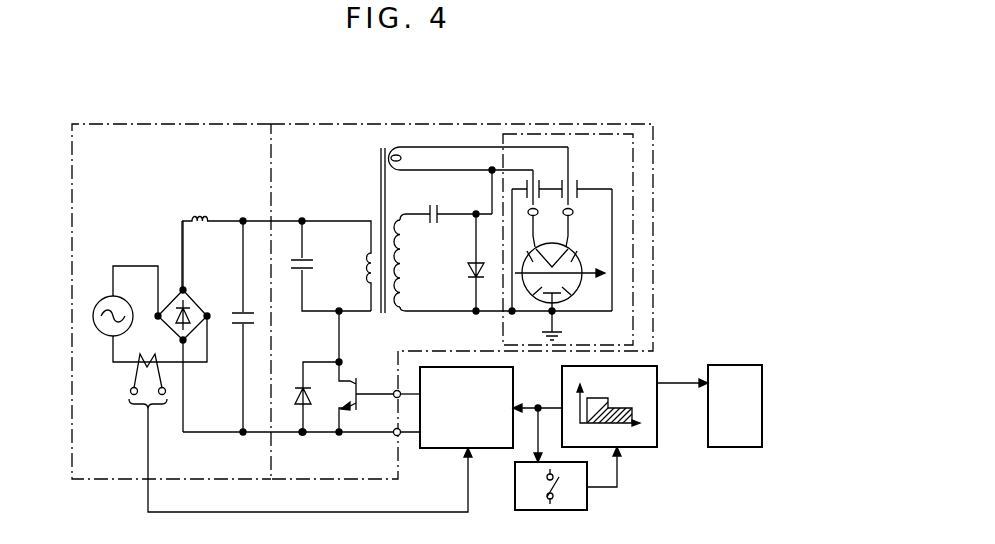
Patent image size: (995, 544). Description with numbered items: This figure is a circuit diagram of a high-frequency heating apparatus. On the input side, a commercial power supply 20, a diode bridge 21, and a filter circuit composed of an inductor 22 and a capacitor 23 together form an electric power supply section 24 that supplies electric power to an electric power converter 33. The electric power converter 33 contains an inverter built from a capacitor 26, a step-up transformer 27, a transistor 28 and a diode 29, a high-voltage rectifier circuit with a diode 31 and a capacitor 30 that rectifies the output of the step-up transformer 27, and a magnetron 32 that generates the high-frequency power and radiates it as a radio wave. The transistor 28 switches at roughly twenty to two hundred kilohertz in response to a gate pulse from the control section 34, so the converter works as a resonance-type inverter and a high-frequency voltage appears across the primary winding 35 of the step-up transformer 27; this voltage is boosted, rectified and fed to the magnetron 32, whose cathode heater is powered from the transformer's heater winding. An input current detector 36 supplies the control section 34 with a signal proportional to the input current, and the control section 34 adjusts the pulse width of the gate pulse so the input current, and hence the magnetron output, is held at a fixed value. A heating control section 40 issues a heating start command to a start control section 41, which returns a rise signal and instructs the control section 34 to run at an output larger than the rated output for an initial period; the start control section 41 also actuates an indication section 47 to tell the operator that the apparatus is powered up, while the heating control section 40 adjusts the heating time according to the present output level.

The commercial power supply 20 is at (108, 298).
The diode bridge 21 is at (196, 300).
The inductor 22 is at (203, 217).
The capacitor 23 is at (240, 330).
The electric power supply section 24 is at (173, 124).
The capacitor 26 is at (312, 270).
The step-up transformer 27 is at (381, 184).
The transistor 28 is at (360, 380).
The diode 29 is at (298, 385).
The capacitor 30 is at (434, 208).
The diode 31 is at (468, 270).
The magnetron 32 is at (636, 142).
The electric power converter 33 is at (362, 124).
The control section 34 is at (441, 450).
The primary winding 35 is at (366, 260).
The input current detector 36 is at (126, 380).
The heating control section 40 is at (588, 496).
The start control section 41 is at (645, 448).
The indication section 47 is at (742, 448).